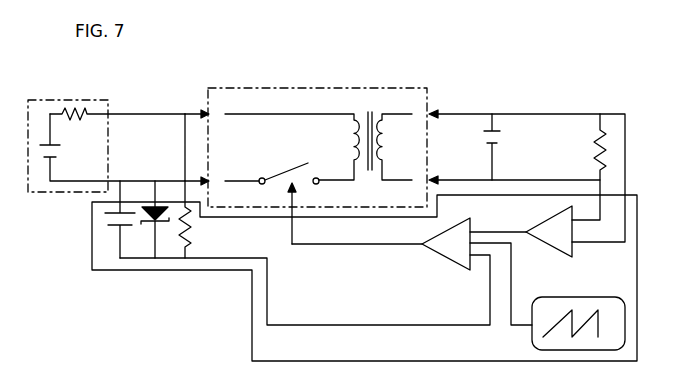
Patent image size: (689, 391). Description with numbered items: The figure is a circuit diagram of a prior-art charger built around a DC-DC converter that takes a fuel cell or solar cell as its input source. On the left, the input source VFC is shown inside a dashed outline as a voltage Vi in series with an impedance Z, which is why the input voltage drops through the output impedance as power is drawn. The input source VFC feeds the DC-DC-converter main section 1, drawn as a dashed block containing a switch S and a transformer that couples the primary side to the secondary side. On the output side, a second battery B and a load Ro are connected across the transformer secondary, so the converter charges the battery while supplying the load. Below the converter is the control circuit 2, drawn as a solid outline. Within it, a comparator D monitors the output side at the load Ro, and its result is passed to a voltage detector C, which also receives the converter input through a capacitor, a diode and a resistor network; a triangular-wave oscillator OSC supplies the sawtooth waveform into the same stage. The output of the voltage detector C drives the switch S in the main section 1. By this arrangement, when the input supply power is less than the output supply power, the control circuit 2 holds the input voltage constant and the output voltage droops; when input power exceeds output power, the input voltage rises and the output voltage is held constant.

The DC-DC-converter main section 1 is at (372, 198).
The control circuit 2 is at (272, 354).
The switch S is at (272, 194).
The second battery B is at (500, 147).
The load Ro is at (585, 167).
The source impedance Z is at (106, 146).
The input voltage Vi is at (69, 170).
The input source (fuel cell) VFC is at (165, 140).
The voltage detector C is at (326, 271).
The comparator D is at (538, 239).
The triangular-wave oscillator OSC is at (576, 311).